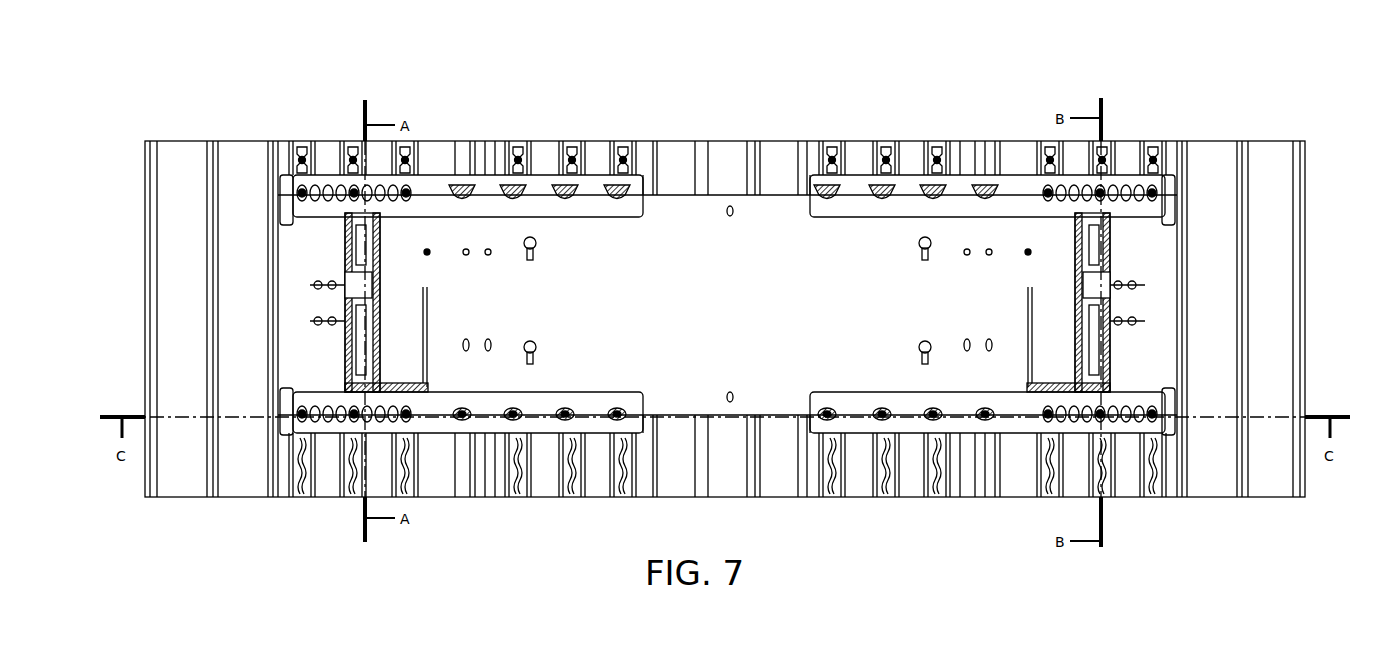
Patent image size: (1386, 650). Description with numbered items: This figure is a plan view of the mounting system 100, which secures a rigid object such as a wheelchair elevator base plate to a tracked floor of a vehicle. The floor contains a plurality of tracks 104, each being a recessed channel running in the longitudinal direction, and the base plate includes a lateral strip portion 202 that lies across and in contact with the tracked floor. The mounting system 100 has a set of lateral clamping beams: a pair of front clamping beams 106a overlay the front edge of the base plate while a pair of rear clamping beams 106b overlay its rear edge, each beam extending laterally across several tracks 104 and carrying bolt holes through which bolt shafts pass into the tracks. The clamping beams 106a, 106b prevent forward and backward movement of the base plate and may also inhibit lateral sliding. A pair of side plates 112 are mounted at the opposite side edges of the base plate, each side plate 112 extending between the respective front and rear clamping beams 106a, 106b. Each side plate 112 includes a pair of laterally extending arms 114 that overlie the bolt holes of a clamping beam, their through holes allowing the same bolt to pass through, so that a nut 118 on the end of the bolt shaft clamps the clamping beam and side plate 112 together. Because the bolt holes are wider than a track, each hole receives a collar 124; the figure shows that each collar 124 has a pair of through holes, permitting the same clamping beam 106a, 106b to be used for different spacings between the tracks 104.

The mounting system 100 is at (1182, 112).
The tracks 104 is at (572, 470).
The front clamping beams 106a is at (975, 425).
The rear clamping beams 106b is at (860, 195).
The side plate 112 is at (1148, 242).
The laterally extending arms 114 is at (1065, 180).
The nut 118 is at (1160, 190).
The collar 124 is at (516, 188).
The lateral strip portion 202 is at (697, 213).